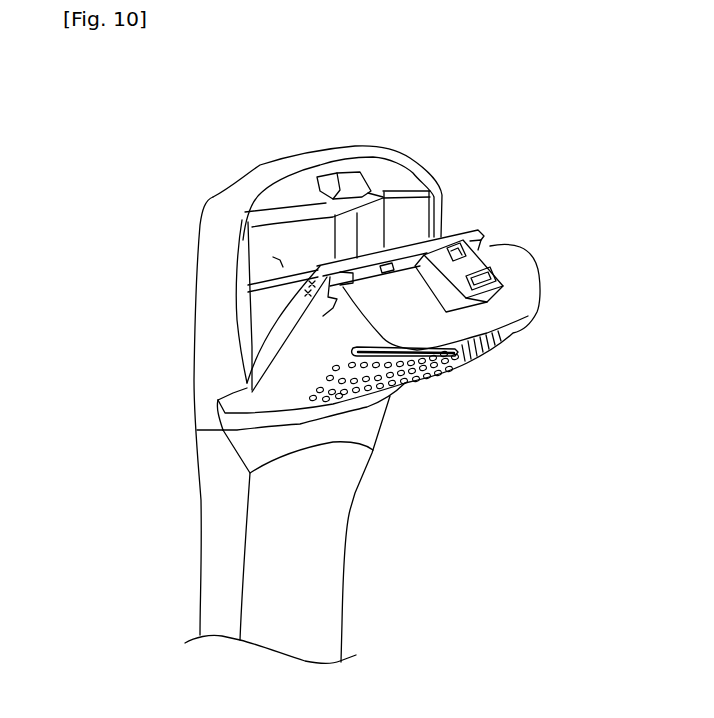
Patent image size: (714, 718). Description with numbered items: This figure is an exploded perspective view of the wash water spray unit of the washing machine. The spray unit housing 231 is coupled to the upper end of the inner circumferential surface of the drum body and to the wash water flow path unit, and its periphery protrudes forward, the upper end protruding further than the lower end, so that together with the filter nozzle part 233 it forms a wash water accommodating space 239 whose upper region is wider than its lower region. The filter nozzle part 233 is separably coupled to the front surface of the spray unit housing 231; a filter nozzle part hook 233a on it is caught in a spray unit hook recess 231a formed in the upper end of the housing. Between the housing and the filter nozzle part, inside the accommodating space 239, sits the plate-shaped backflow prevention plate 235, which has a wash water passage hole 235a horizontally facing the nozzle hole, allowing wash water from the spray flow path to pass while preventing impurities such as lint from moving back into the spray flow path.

The spray unit housing 231 is at (220, 210).
The spray unit hook recess 231a is at (340, 183).
The wash water accommodating space 239 is at (258, 264).
The backflow prevention plate 235 is at (458, 232).
The wash water passage hole 235a is at (338, 276).
The filter nozzle part 233 is at (522, 267).
The filter nozzle part hook 233a is at (493, 292).